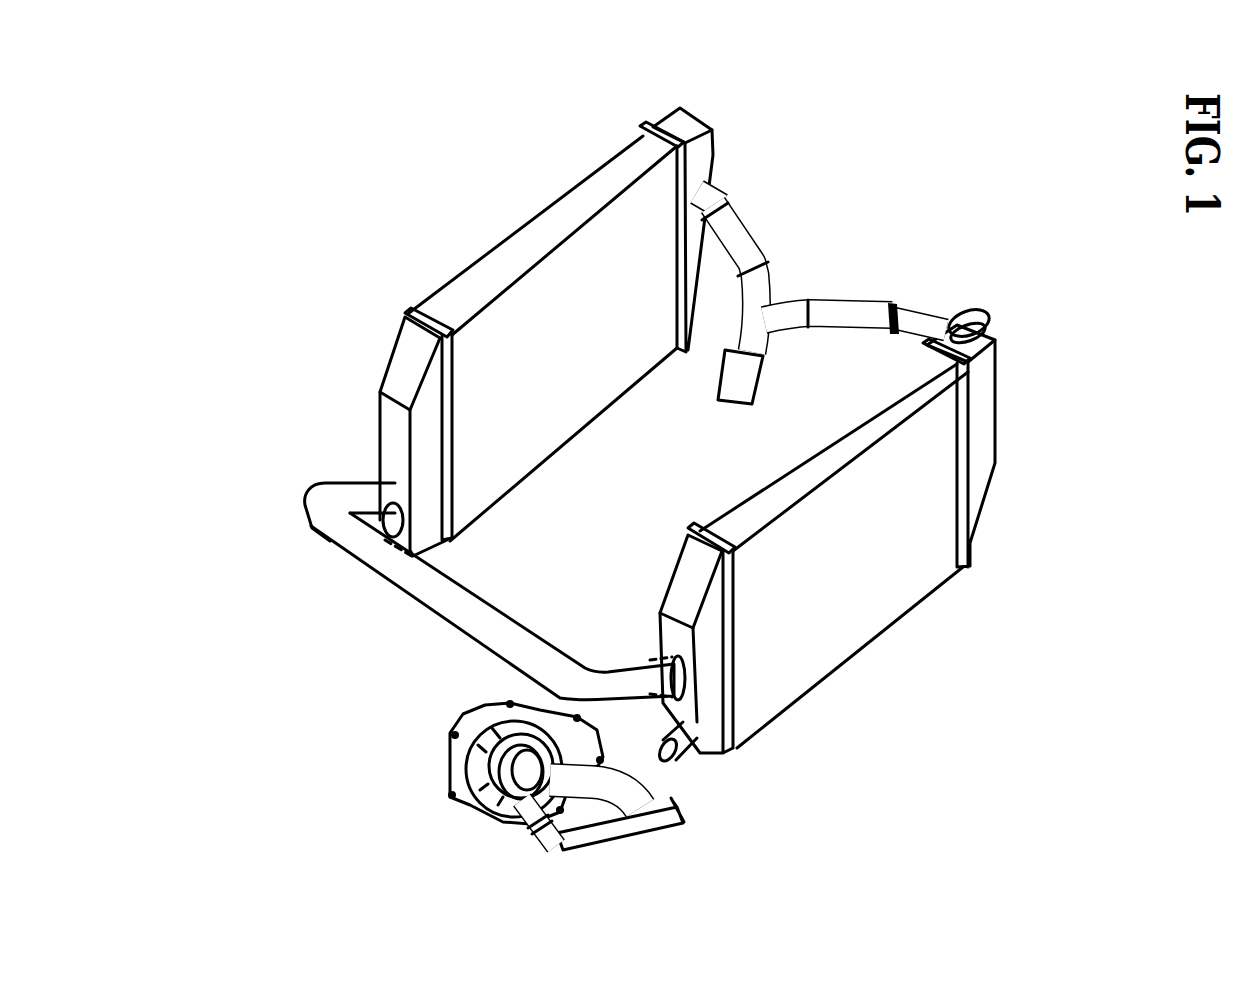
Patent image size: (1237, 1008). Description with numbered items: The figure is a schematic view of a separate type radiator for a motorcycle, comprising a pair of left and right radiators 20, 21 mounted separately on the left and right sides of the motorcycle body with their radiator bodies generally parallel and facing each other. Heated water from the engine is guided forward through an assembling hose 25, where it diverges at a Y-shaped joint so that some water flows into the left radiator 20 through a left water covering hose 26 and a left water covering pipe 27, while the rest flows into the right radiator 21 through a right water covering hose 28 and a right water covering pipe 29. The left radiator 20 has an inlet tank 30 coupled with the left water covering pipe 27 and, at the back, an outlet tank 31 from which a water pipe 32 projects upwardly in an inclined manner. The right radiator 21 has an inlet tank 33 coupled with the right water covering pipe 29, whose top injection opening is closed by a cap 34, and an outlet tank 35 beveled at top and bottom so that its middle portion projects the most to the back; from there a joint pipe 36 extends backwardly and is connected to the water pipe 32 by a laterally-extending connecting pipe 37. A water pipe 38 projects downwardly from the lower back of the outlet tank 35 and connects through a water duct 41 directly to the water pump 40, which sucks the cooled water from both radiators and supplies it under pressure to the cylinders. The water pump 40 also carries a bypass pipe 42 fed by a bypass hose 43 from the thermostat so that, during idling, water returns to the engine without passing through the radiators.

The left radiator 20 is at (517, 240).
The right radiator 21 is at (1027, 643).
The assembling hose 25 is at (718, 380).
The left water covering hose 26 is at (755, 223).
The left water covering pipe 27 is at (715, 185).
The right water covering hose 28 is at (865, 297).
The right water covering pipe 29 is at (925, 320).
The inlet tank 30 is at (677, 112).
The outlet tank 31 is at (388, 443).
The water pipe 32 is at (380, 503).
The inlet tank 33 is at (998, 433).
The cap 34 is at (990, 307).
The outlet tank 35 is at (673, 580).
The joint pipe 36 is at (633, 663).
The connecting pipe 37 is at (417, 595).
The water pipe 38 is at (693, 772).
The water pump 40 is at (457, 763).
The water duct 41 is at (627, 813).
The bypass pipe 42 is at (525, 823).
The bypass hose 43 is at (587, 850).